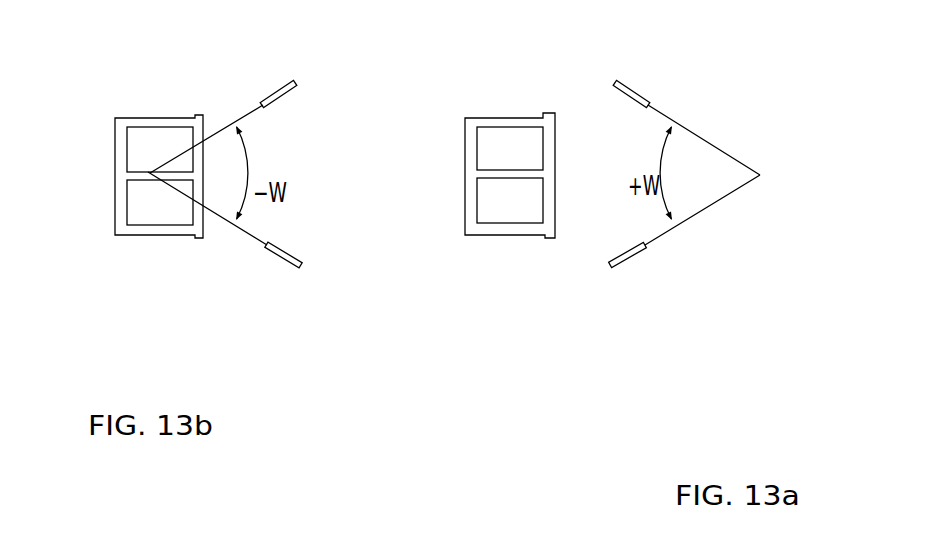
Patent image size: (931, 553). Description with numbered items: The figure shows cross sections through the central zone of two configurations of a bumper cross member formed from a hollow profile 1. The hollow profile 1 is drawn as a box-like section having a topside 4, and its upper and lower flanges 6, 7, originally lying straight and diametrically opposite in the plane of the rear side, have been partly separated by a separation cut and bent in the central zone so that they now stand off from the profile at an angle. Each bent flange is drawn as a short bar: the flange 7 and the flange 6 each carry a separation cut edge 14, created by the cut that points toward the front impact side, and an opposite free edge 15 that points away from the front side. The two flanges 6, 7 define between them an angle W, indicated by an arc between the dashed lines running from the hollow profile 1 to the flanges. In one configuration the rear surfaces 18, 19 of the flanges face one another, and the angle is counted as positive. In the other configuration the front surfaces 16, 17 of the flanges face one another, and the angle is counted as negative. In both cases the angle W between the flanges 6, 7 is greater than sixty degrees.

In FIG. 13b, the hollow profile 1 is at (135, 140).
In FIG. 13a, the hollow profile 1 is at (458, 110).
In FIG. 13b, the topside 4 is at (132, 118).
In FIG. 13b, the upper flange 6 is at (297, 262).
In FIG. 13a, the upper flange 6 is at (613, 258).
In FIG. 13b, the lower flange 7 is at (292, 95).
In FIG. 13a, the lower flange 7 is at (618, 92).
In FIG. 13b, the separation cut edge 14 is at (262, 102).
In FIG. 13a, the separation cut edge 14 is at (648, 102).
In FIG. 13b, the free edge 15 is at (292, 83).
In FIG. 13a, the free edge 15 is at (615, 83).
In FIG. 13b, the front surface 16 is at (284, 248).
In FIG. 13a, the front surface 16 is at (632, 261).
In FIG. 13b, the front surface 17 is at (278, 105).
In FIG. 13a, the front surface 17 is at (638, 87).
In FIG. 13b, the rear surface 18 is at (283, 266).
In FIG. 13a, the rear surface 18 is at (628, 250).
In FIG. 13b, the rear surface 19 is at (272, 90).
In FIG. 13a, the rear surface 19 is at (635, 105).